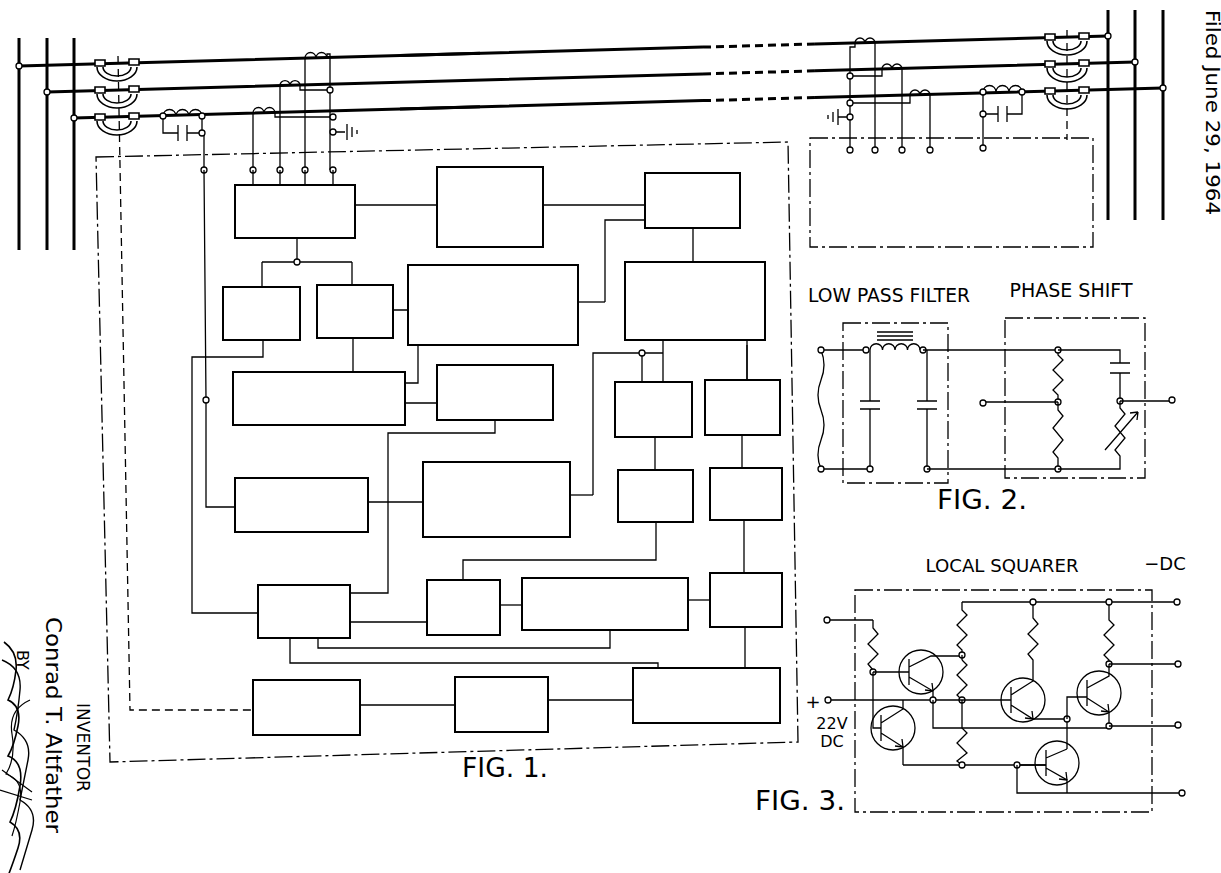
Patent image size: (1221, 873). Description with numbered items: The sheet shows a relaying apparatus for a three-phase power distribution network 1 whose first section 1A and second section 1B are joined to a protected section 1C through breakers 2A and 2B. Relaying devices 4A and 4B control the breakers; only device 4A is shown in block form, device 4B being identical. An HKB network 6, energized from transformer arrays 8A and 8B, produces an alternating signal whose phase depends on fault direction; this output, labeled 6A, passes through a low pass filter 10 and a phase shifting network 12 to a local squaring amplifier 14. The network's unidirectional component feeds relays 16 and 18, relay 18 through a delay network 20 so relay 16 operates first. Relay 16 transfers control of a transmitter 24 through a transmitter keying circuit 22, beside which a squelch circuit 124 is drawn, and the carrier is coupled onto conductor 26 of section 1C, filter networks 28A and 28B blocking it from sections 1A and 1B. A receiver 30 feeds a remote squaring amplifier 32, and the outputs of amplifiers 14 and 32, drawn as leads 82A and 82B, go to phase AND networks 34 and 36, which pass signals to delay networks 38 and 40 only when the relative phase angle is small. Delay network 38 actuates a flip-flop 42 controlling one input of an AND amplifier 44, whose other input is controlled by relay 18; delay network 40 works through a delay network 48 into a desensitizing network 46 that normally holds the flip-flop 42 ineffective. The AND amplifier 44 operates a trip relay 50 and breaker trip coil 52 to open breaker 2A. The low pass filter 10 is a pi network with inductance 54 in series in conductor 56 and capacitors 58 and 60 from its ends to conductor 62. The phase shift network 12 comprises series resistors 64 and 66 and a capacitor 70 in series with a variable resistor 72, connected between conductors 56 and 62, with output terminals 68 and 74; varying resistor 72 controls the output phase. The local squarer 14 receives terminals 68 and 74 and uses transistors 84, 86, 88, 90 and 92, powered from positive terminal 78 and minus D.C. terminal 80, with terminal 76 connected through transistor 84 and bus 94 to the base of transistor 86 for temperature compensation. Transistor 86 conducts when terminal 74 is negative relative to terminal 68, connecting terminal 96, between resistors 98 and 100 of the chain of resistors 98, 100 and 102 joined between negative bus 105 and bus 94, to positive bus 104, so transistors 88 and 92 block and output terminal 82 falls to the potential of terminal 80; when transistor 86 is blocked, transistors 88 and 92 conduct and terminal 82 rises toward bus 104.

In FIG. 1, the three-phase power distribution network 1 is at (578, 36).
In FIG. 1, the first section 1A is at (46, 159).
In FIG. 1, the second section 1B is at (1135, 129).
In FIG. 1, the protected section 1C is at (472, 64).
In FIG. 1, the breaker 2A is at (117, 58).
In FIG. 1, the breaker 2B is at (1067, 30).
In FIG. 1, the relaying device 4A is at (100, 420).
In FIG. 1, the relaying device 4B is at (872, 250).
In FIG. 1, the HKB network 6 is at (347, 183).
In FIG. 1, the output of HKB network 6A is at (389, 205).
In FIG. 2, the output of HKB network 6A is at (836, 409).
In FIG. 1, the transformer array 8A is at (267, 48).
In FIG. 1, the transformer array 8B is at (880, 30).
In FIG. 1, the low pass filter 10 is at (543, 167).
In FIG. 2, the low pass filter 10 is at (878, 323).
In FIG. 1, the phase shifting network 12 is at (740, 173).
In FIG. 2, the phase shifting network 12 is at (1058, 318).
In FIG. 1, the local squaring amplifier 14 is at (759, 262).
In FIG. 3, the local squaring amplifier 14 is at (875, 590).
In FIG. 1, the relay 16 is at (372, 282).
In FIG. 1, the relay 18 is at (299, 584).
In FIG. 1, the delay network 20 is at (231, 285).
In FIG. 1, the transmitter keying circuit 22 is at (562, 264).
In FIG. 1, the transmitter 24 is at (305, 372).
In FIG. 1, the conductor 26 is at (483, 107).
In FIG. 1, the filter network 28A is at (170, 136).
In FIG. 1, the filter network 28B is at (978, 110).
In FIG. 1, the receiver 30 is at (299, 478).
In FIG. 1, the remote squaring amplifier 32 is at (570, 534).
In FIG. 1, the phase AND network 34 is at (765, 435).
In FIG. 1, the phase AND network 36 is at (683, 437).
In FIG. 1, the delay network 38 is at (766, 520).
In FIG. 1, the delay network 40 is at (683, 522).
In FIG. 1, the flip-flop 42 is at (775, 627).
In FIG. 1, the AND amplifier 44 is at (698, 668).
In FIG. 1, the desensitizing network 46 is at (668, 578).
In FIG. 1, the delay network 48 is at (434, 580).
In FIG. 1, the trip relay 50 is at (453, 681).
In FIG. 1, the breaker trip coil 52 is at (268, 680).
In FIG. 2, the inductance 54 is at (892, 354).
In FIG. 2, the conductor 56 is at (971, 350).
In FIG. 2, the capacitor 58 is at (877, 404).
In FIG. 2, the capacitor 60 is at (917, 417).
In FIG. 2, the conductor 62 is at (970, 469).
In FIG. 2, the resistor 64 is at (1052, 370).
In FIG. 2, the resistor 66 is at (1054, 434).
In FIG. 2, the output terminal 68 is at (982, 404).
In FIG. 3, the output terminal 68 is at (829, 697).
In FIG. 2, the capacitor 70 is at (1112, 366).
In FIG. 2, the variable resistor 72 is at (1118, 432).
In FIG. 2, the output terminal 74 is at (1170, 398).
In FIG. 3, the output terminal 74 is at (826, 617).
In FIG. 3, the output terminal 76 is at (1182, 789).
In FIG. 3, the terminal 78 is at (1178, 721).
In FIG. 3, the terminal 80 is at (1175, 600).
In FIG. 3, the output terminal 82 is at (1178, 660).
In FIG. 1, the output conductor 82A is at (748, 372).
In FIG. 1, the output conductor 82B is at (665, 374).
In FIG. 3, the transistor 84 is at (910, 745).
In FIG. 3, the transistor 86 is at (900, 661).
In FIG. 3, the transistor 88 is at (1012, 680).
In FIG. 3, the transistor 90 is at (1080, 752).
In FIG. 3, the transistor 92 is at (1121, 693).
In FIG. 3, the bus 94 is at (933, 766).
In FIG. 3, the terminal 96 is at (964, 653).
In FIG. 3, the resistor 98 is at (958, 623).
In FIG. 3, the resistor 100 is at (967, 673).
In FIG. 3, the resistor 102 is at (975, 754).
In FIG. 3, the positive bus 104 is at (995, 728).
In FIG. 3, the negative bus 105 is at (1068, 603).
In FIG. 1, the squelch circuit 124 is at (536, 420).